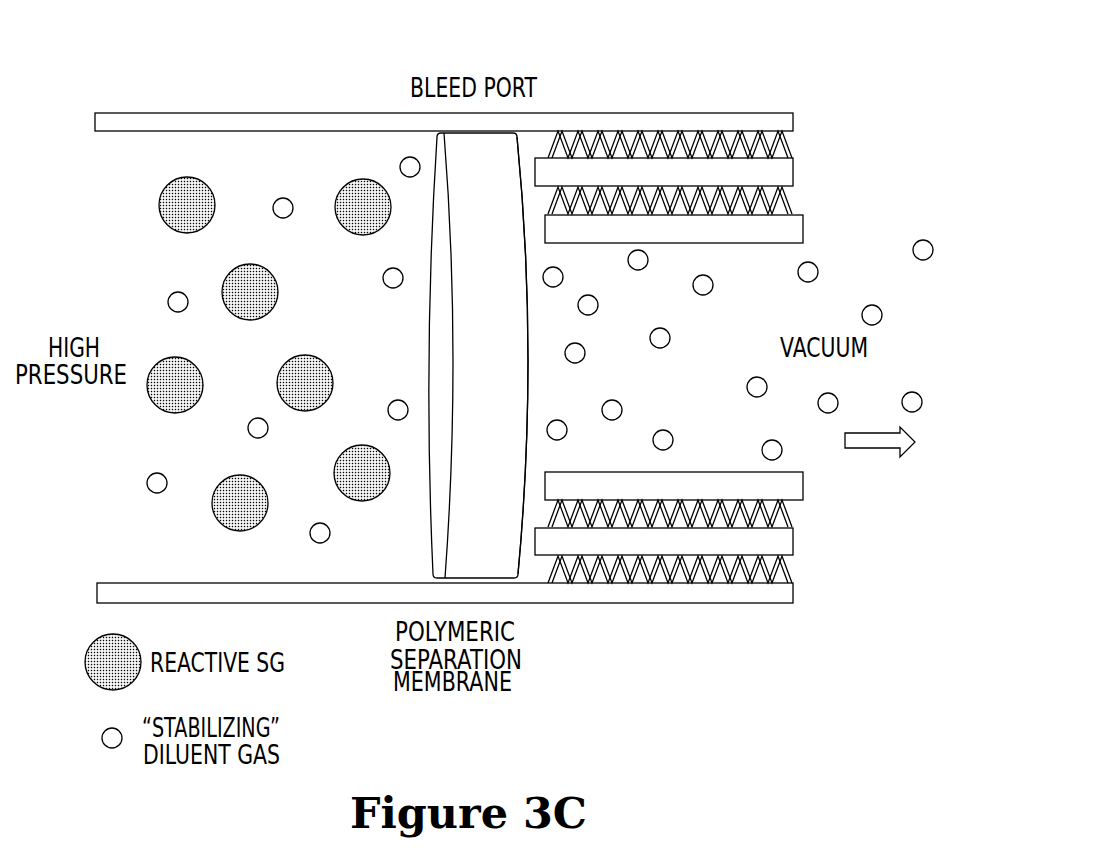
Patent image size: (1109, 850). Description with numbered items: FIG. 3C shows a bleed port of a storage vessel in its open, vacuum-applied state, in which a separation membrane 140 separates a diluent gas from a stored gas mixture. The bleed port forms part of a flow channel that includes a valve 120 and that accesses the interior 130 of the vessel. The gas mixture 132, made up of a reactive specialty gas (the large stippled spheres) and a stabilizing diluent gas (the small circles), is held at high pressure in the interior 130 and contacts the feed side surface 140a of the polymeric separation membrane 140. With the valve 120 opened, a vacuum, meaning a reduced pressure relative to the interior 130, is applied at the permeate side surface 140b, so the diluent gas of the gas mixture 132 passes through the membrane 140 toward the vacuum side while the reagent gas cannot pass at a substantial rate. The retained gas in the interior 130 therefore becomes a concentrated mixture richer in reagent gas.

The valve 120 is at (705, 75).
The interior 130 is at (118, 491).
The gas mixture 132 is at (281, 175).
The separation membrane 140 is at (467, 396).
The feed side surface 140a is at (431, 268).
The permeate side surface 140b is at (528, 298).